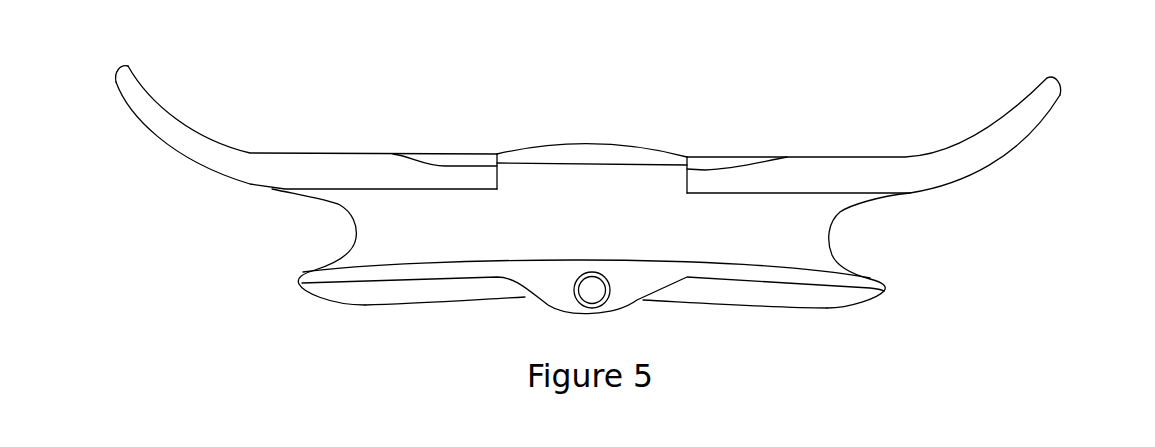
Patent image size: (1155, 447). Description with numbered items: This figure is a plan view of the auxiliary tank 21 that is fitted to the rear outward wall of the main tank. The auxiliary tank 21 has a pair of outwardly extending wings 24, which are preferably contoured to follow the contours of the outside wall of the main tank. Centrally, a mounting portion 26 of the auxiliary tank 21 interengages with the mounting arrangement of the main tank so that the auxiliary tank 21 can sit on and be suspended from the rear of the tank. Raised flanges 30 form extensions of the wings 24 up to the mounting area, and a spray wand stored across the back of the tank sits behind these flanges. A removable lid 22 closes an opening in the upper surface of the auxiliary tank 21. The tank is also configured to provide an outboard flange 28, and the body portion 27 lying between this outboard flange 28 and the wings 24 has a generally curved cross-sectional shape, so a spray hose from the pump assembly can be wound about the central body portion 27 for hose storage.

The auxiliary tank 21 is at (351, 317).
The removable lid 22 is at (597, 293).
The outwardly extending wings 24 is at (213, 162).
The mounting portion 26 is at (605, 134).
The body portion 27 is at (807, 230).
The outboard flange 28 is at (780, 278).
The raised flanges 30 is at (448, 160).